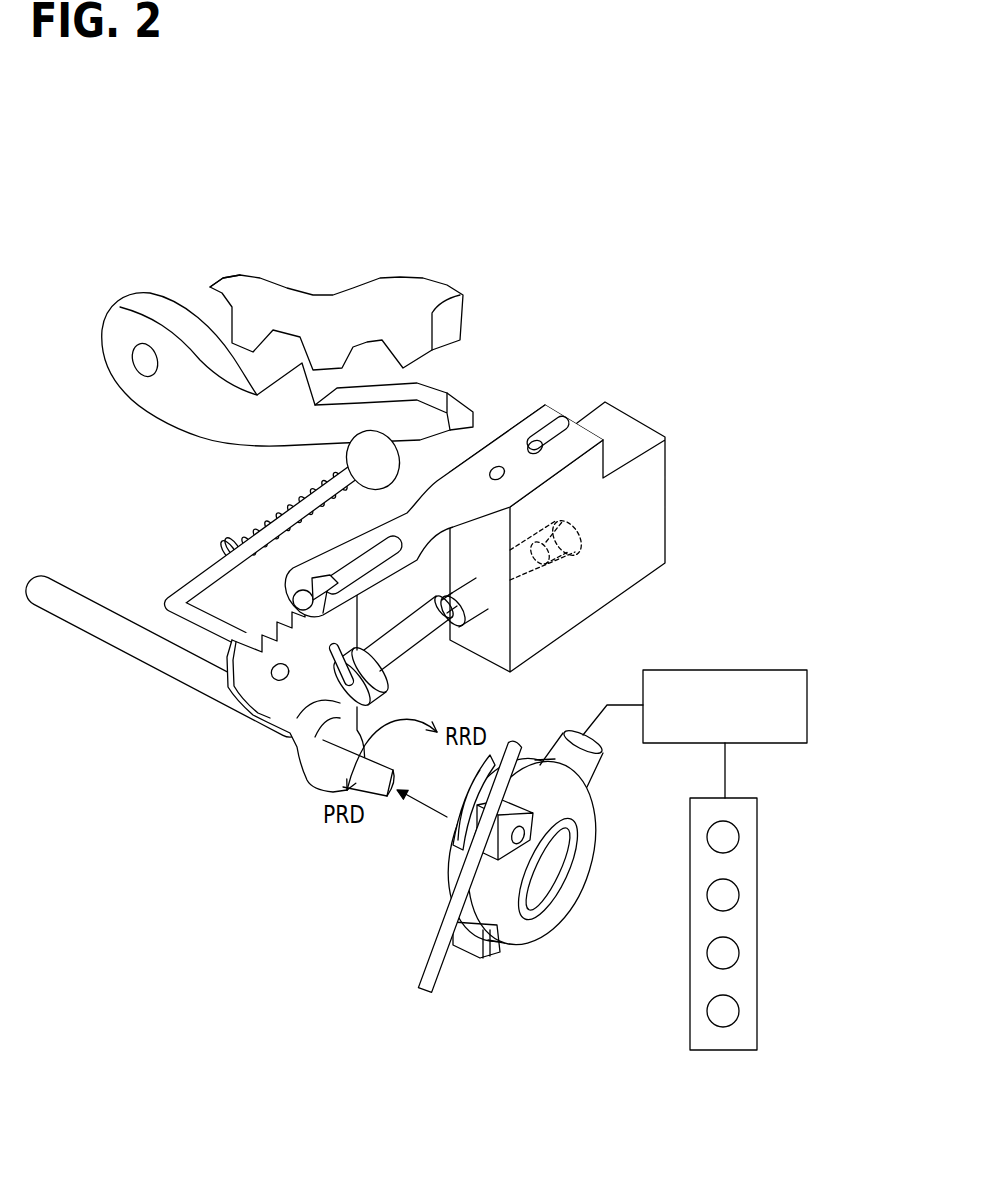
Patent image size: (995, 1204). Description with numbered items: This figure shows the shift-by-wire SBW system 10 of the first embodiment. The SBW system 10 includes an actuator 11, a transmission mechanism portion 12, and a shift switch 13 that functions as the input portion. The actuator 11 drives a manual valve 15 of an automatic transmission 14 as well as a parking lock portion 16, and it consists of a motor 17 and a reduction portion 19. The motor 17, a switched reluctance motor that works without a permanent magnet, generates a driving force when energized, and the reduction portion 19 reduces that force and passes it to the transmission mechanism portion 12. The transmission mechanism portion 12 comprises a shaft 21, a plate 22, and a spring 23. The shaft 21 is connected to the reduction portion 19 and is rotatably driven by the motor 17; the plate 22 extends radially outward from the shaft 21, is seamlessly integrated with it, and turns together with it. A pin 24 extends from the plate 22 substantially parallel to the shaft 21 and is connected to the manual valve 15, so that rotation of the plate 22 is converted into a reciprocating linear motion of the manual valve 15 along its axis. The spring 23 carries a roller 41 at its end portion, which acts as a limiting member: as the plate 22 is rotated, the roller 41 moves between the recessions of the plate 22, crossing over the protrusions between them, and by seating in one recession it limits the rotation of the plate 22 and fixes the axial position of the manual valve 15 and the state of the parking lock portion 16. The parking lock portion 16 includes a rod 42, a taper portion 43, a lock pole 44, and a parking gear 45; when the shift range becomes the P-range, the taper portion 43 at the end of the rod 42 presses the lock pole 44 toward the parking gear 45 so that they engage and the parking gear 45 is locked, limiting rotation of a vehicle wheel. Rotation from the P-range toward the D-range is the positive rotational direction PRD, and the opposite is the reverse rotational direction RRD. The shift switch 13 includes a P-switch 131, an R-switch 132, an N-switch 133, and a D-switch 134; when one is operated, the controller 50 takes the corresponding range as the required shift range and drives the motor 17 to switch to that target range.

The SBW system 10 is at (653, 318).
The actuator 11 is at (512, 867).
The transmission mechanism portion 12 is at (190, 737).
The shift switch 13 is at (782, 924).
The P-switch 131 is at (739, 835).
The R-switch 132 is at (739, 893).
The N-switch 133 is at (739, 951).
The D-switch 134 is at (739, 1009).
The automatic transmission 14 is at (527, 400).
The manual valve 15 is at (413, 657).
The parking lock portion 16 is at (338, 282).
The motor 17 is at (517, 942).
The reduction portion 19 is at (430, 917).
The shaft 21 is at (140, 653).
The plate 22 is at (257, 705).
The spring 23 is at (420, 548).
The pin 24 is at (355, 652).
The roller 41 is at (301, 590).
The rod 42 is at (172, 596).
The taper portion 43 is at (394, 455).
The lock pole 44 is at (248, 437).
The parking gear 45 is at (218, 288).
The controller 50 is at (730, 670).